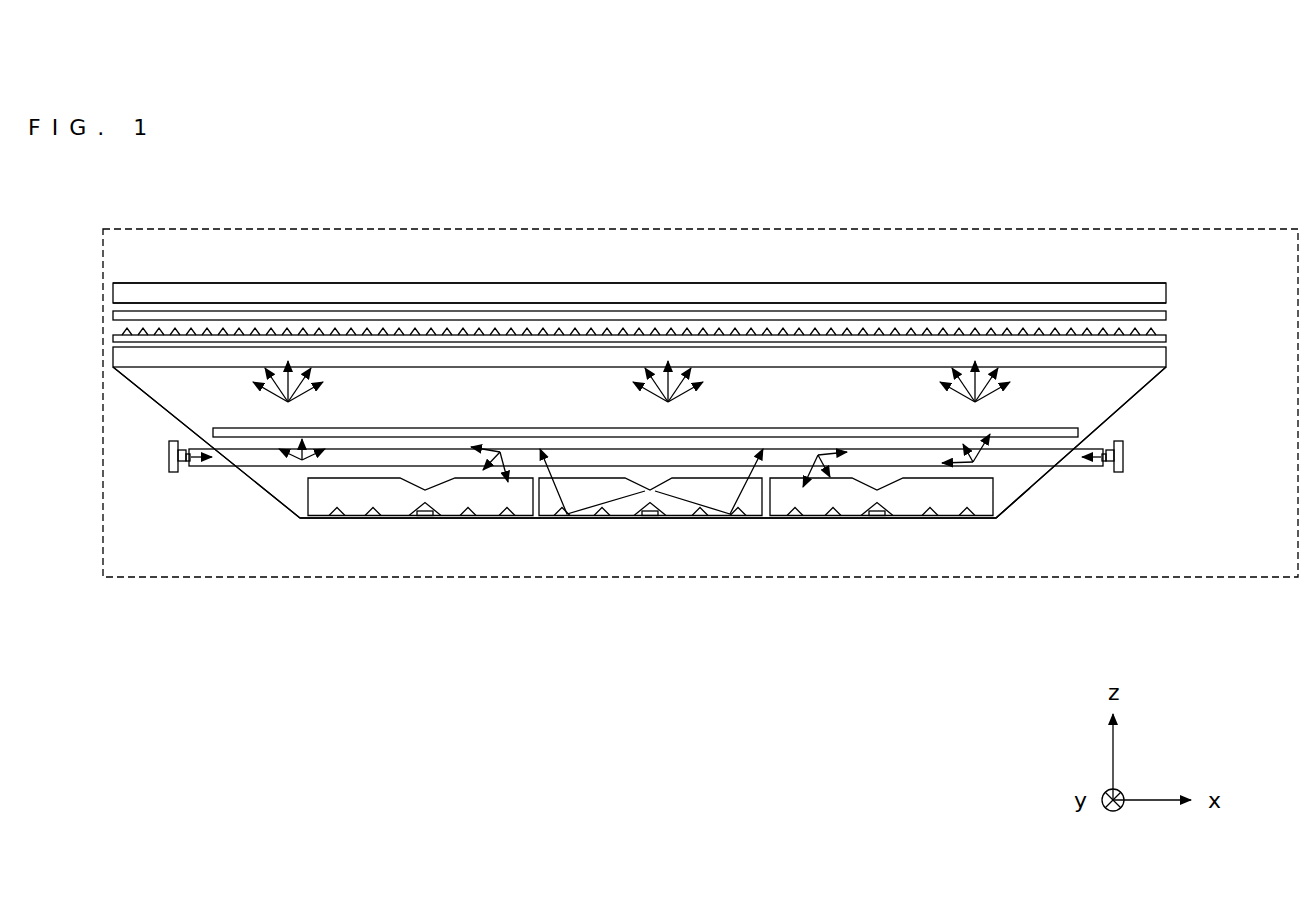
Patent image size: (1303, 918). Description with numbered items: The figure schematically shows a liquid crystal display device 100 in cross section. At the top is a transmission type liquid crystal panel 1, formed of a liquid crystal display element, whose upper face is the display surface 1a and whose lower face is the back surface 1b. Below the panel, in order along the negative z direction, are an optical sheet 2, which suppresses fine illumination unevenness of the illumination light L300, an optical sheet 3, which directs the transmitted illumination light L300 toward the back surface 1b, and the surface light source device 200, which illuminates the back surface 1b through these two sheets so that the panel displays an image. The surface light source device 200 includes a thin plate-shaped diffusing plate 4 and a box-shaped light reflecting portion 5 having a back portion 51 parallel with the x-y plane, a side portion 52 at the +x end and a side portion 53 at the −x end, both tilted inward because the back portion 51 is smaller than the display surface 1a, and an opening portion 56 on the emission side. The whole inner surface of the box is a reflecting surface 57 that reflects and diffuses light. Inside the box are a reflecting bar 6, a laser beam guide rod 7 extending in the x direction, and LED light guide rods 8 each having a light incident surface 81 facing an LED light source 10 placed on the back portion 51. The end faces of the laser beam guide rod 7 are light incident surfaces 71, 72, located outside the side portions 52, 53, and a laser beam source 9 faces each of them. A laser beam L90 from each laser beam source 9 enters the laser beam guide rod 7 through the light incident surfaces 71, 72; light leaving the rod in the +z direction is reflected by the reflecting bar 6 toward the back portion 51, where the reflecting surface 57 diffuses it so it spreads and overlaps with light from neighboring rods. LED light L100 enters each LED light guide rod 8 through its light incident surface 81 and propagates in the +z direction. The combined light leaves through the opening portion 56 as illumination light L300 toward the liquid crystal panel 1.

The liquid crystal display device 100 is at (1165, 228).
The liquid crystal panel 1 is at (1161, 282).
The display surface 1a is at (733, 283).
The back surface 1b is at (130, 303).
The optical sheet 2 is at (1168, 314).
The optical sheet 3 is at (1168, 339).
The diffusing plate 4 is at (1162, 355).
The surface light source device 200 is at (1183, 435).
The light reflecting portion 5 is at (1102, 404).
The back portion 51 is at (740, 520).
The side portion 52 is at (1035, 488).
The side portion 53 is at (262, 487).
The opening portion 56 is at (458, 373).
The reflecting surface 57 is at (1012, 488).
The reflecting bar 6 is at (213, 431).
The laser beam guide rod 7 is at (1070, 468).
The light incident surface 71 is at (1112, 464).
The light incident surface 72 is at (183, 462).
The laser beam source 9 is at (168, 455).
The LED light guide rod 8 is at (520, 508).
The light incident surface 81 is at (412, 520).
The LED light source 10 is at (424, 518).
The laser beam L90 is at (200, 459).
The LED light L100 is at (697, 500).
The illumination light L300 is at (303, 396).